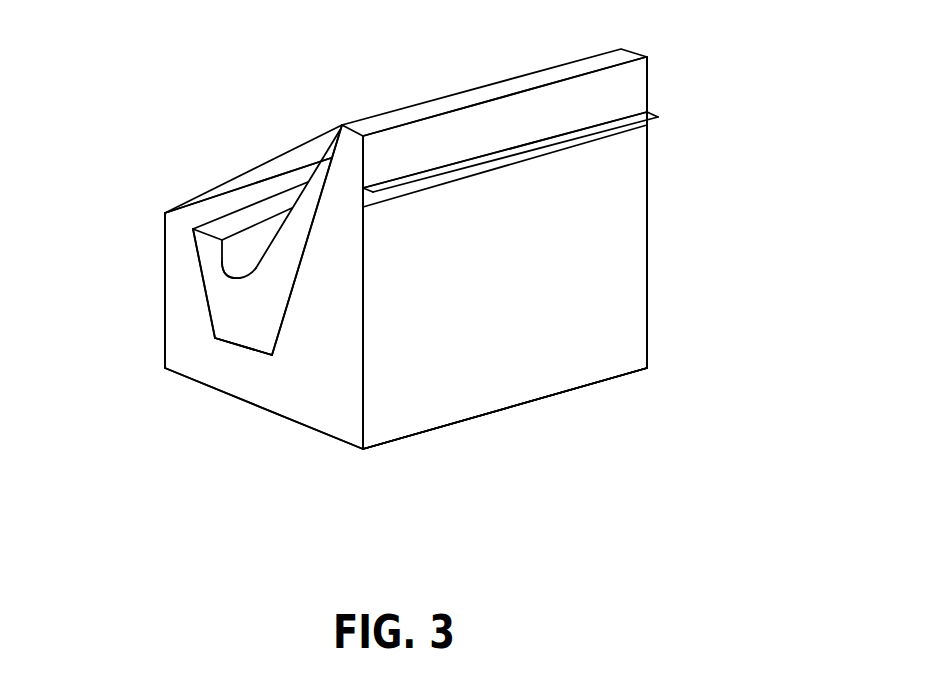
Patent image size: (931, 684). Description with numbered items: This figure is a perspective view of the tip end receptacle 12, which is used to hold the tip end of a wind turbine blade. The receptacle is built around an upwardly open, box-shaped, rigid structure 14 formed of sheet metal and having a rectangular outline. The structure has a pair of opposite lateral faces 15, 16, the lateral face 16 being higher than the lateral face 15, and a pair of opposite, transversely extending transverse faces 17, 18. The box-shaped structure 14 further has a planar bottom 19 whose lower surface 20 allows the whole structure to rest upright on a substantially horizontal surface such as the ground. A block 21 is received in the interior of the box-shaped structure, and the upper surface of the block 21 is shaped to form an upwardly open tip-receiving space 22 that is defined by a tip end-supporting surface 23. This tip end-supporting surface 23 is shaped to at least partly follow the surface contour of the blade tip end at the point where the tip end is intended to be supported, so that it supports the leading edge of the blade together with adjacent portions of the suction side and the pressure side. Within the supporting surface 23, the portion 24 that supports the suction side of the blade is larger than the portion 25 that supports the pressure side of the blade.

The tip end receptacle 12 is at (704, 368).
The box-shaped rigid structure 14 is at (598, 302).
The lateral face 15 is at (165, 263).
The lateral face 16 is at (610, 186).
The transverse face 17 is at (298, 405).
The transverse face 18 is at (648, 212).
The planar bottom 19 is at (515, 408).
The lower surface 20 is at (440, 424).
The block 21 is at (242, 328).
The tip-receiving space 22 is at (260, 243).
The tip end-supporting surface 23 is at (228, 277).
The portion of the supporting surface supporting the suction side 24 is at (306, 198).
The portion of the supporting surface supporting the pressure side 25 is at (243, 248).